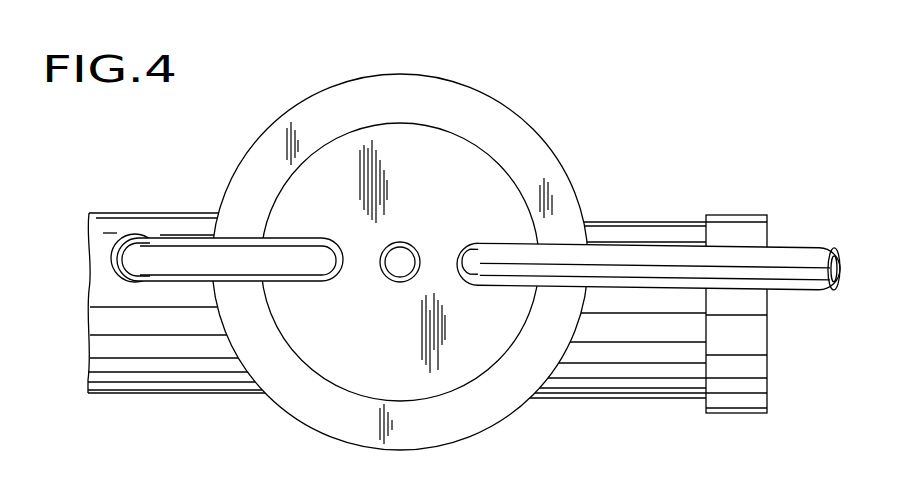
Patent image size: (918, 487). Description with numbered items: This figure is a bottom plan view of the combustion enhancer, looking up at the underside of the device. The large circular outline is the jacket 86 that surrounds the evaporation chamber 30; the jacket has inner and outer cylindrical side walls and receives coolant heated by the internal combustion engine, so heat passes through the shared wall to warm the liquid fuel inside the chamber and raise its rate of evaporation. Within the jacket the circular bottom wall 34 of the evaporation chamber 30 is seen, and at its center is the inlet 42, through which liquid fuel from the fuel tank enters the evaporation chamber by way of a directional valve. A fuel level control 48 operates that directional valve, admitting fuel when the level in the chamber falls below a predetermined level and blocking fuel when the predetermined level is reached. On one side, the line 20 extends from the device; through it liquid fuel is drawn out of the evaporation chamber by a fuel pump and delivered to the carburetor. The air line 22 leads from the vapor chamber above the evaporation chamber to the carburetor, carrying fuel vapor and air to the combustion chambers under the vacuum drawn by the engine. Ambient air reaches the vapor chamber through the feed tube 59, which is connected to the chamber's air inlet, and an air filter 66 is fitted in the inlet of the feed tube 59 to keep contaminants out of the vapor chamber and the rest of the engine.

The line 20 is at (595, 265).
The air line 22 is at (183, 223).
The evaporation chamber 30 is at (479, 143).
The bottom wall 34 is at (432, 380).
The inlet 42 is at (402, 246).
The fuel level control 48 is at (210, 257).
The feed tube 59 is at (572, 383).
The air filter 66 is at (728, 237).
The jacket 86 is at (444, 70).